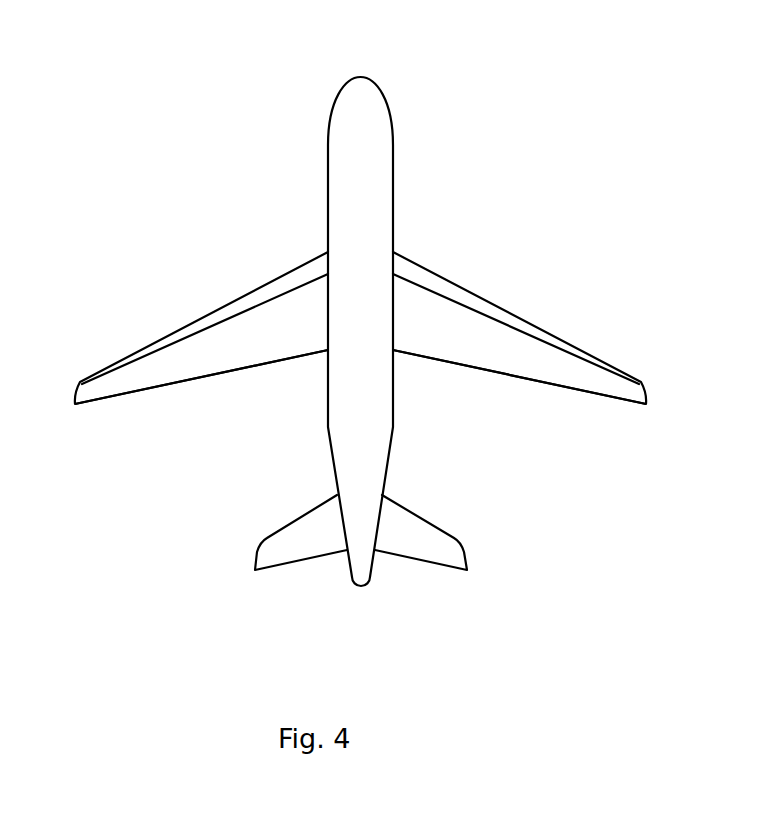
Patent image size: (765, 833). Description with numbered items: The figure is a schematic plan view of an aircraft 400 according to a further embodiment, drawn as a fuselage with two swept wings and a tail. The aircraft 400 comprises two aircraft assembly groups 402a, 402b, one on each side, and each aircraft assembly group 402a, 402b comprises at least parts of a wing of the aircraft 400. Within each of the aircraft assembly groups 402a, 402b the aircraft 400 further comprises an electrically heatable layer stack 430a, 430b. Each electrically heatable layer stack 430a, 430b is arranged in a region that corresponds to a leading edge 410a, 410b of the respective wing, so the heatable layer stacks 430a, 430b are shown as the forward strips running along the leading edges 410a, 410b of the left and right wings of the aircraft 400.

The aircraft 400 is at (133, 62).
The leading edge 410a is at (141, 328).
The leading edge 410b is at (553, 315).
The electrically heatable layer stack 430a is at (217, 315).
The electrically heatable layer stack 430b is at (487, 303).
The aircraft assembly group 402a is at (240, 363).
The aircraft assembly group 402b is at (502, 365).